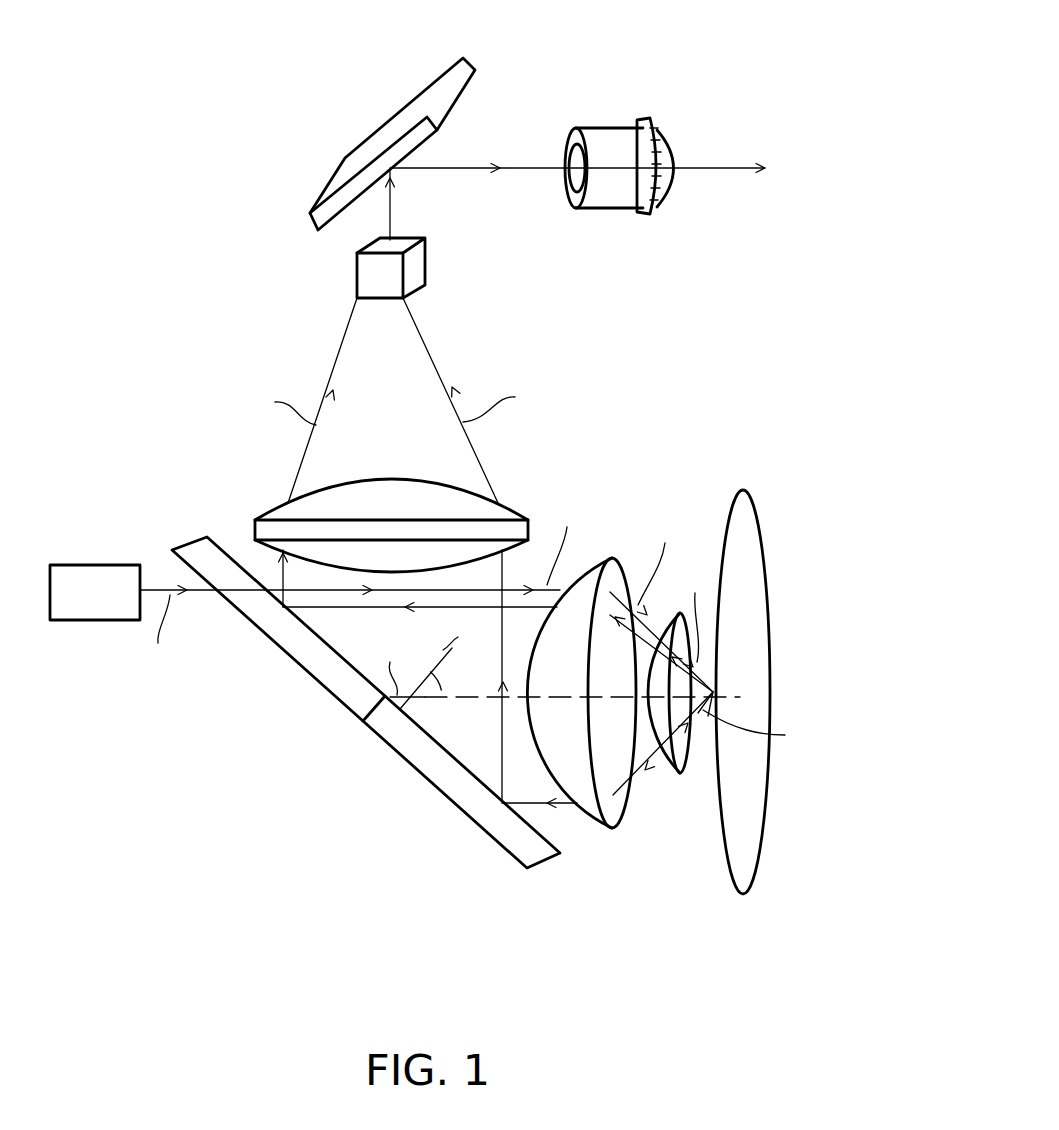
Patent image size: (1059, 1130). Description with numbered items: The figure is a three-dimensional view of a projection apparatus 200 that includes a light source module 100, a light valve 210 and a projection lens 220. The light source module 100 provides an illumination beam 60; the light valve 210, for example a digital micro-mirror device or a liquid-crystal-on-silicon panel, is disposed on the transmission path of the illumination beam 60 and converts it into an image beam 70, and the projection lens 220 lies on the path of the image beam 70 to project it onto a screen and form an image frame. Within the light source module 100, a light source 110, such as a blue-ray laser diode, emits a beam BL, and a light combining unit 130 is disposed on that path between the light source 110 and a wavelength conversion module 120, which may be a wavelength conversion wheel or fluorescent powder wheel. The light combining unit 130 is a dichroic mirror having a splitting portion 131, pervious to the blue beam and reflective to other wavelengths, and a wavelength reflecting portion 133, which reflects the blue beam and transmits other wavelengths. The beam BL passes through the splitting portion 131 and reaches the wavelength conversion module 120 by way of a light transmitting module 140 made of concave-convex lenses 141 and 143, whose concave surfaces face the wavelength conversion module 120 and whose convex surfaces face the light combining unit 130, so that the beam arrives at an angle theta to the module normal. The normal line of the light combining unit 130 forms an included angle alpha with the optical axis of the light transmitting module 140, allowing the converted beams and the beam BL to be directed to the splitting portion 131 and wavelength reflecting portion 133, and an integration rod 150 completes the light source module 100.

The light source module 100 is at (172, 515).
The light source 110 is at (98, 608).
The wavelength conversion module 120 is at (747, 853).
The light combining unit 130 is at (517, 838).
The splitting portion 131 is at (303, 647).
The wavelength reflecting portion 133 is at (432, 763).
The light transmitting module 140 is at (703, 893).
The concave-convex lens 141 is at (612, 815).
The concave-convex lens 143 is at (682, 778).
The integration rod 150 is at (370, 275).
The projection apparatus 200 is at (787, 987).
The light valve 210 is at (428, 98).
The projection lens 220 is at (620, 145).
The illumination beam 60 is at (385, 213).
The image beam 70 is at (473, 170).